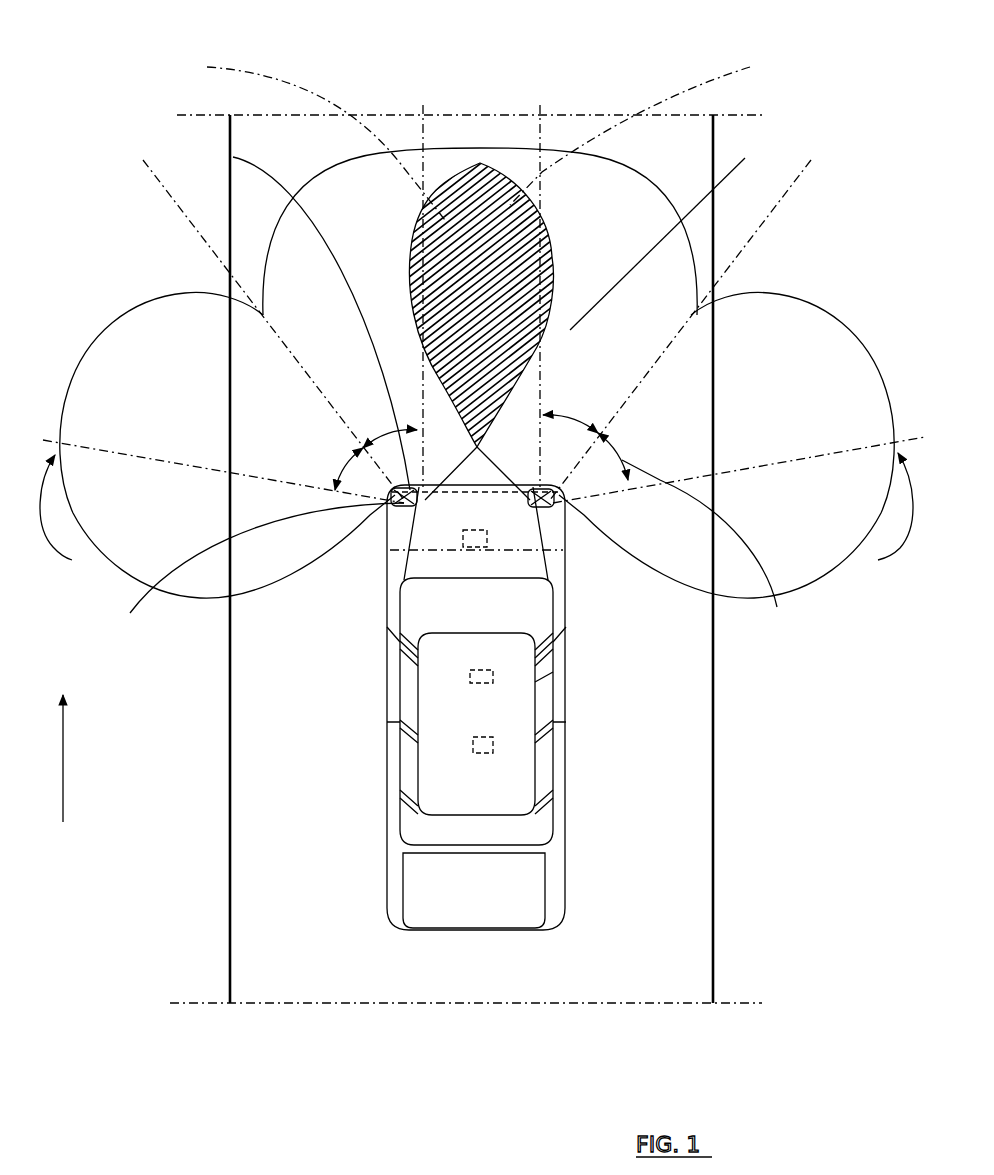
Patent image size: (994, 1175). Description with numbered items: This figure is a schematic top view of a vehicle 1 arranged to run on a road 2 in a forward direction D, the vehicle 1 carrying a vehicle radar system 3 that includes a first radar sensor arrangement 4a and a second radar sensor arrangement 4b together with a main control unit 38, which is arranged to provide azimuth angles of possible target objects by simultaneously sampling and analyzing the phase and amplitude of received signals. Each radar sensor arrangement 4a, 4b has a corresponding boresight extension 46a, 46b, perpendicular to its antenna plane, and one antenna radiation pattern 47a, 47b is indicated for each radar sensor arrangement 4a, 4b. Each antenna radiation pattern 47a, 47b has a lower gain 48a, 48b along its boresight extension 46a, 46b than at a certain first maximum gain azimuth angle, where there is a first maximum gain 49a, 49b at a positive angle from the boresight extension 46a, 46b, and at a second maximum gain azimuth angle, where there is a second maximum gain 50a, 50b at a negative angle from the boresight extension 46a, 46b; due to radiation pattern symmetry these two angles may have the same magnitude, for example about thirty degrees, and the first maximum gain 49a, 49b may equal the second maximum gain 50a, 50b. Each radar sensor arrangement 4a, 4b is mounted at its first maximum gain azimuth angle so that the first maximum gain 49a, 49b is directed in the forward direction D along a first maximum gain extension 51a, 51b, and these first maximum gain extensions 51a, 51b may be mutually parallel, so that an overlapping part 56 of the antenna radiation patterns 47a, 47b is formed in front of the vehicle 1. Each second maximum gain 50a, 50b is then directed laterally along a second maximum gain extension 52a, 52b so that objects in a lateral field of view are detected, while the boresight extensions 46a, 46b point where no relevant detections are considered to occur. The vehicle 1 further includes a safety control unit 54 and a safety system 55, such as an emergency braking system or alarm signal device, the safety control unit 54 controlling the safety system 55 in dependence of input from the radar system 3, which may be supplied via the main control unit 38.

The vehicle 1 is at (453, 760).
The road 2 is at (297, 797).
The vehicle radar system 3 is at (553, 680).
The first radar sensor arrangement 4a is at (397, 627).
The second radar sensor arrangement 4b is at (565, 633).
The main control unit 38 is at (548, 705).
The boresight extension 46a is at (160, 183).
The boresight extension 46b is at (762, 230).
The antenna radiation pattern 47a is at (68, 400).
The antenna radiation pattern 47b is at (730, 592).
The lower gain 48a is at (255, 310).
The lower gain 48b is at (706, 308).
The first maximum gain 49a is at (431, 148).
The first maximum gain 49b is at (537, 148).
The second maximum gain 50a is at (69, 527).
The second maximum gain 50b is at (888, 521).
The first maximum gain extension 51a is at (297, 136).
The first maximum gain extension 51b is at (658, 128).
The second maximum gain extension 52a is at (127, 447).
The second maximum gain extension 52b is at (785, 470).
The safety control unit 54 is at (490, 690).
The safety system 55 is at (490, 748).
The overlapping part 56 is at (560, 490).
The forward direction D is at (47, 758).